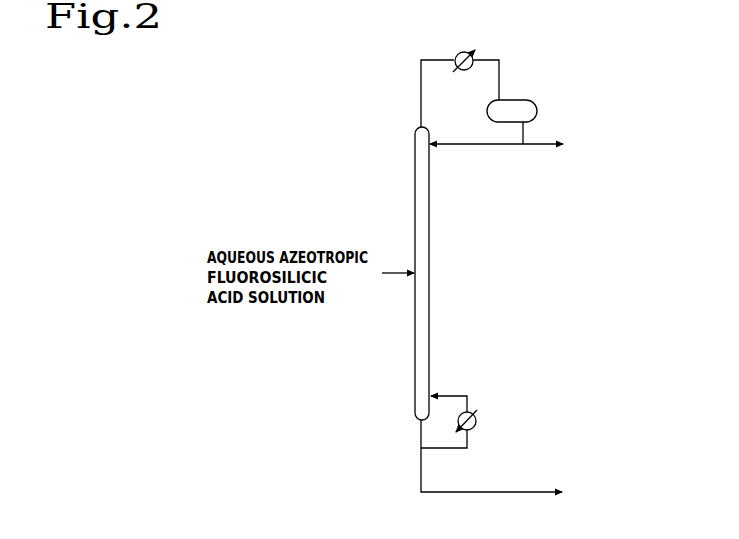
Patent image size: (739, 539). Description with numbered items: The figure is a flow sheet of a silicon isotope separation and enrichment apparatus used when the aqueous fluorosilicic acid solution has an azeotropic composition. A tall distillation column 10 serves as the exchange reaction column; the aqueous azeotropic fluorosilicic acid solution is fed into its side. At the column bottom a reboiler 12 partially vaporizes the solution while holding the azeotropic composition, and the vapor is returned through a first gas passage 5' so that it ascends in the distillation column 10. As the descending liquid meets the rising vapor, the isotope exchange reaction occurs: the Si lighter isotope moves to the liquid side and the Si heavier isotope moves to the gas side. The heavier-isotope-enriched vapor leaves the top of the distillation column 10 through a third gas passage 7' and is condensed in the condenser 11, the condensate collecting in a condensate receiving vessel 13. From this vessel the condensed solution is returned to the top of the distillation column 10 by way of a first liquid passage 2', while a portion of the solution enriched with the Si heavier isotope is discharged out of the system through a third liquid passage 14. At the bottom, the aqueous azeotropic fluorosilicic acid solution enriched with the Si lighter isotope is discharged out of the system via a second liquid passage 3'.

The distillation column 10 is at (413, 212).
The third gas passage 7' is at (413, 93).
The condenser 11 is at (457, 50).
The condensate receiving vessel 13 is at (532, 98).
The first liquid passage 2' is at (476, 168).
The third liquid passage 14 is at (545, 147).
The first gas passage 5' is at (462, 385).
The reboiler 12 is at (479, 426).
The second liquid passage 3' is at (466, 456).